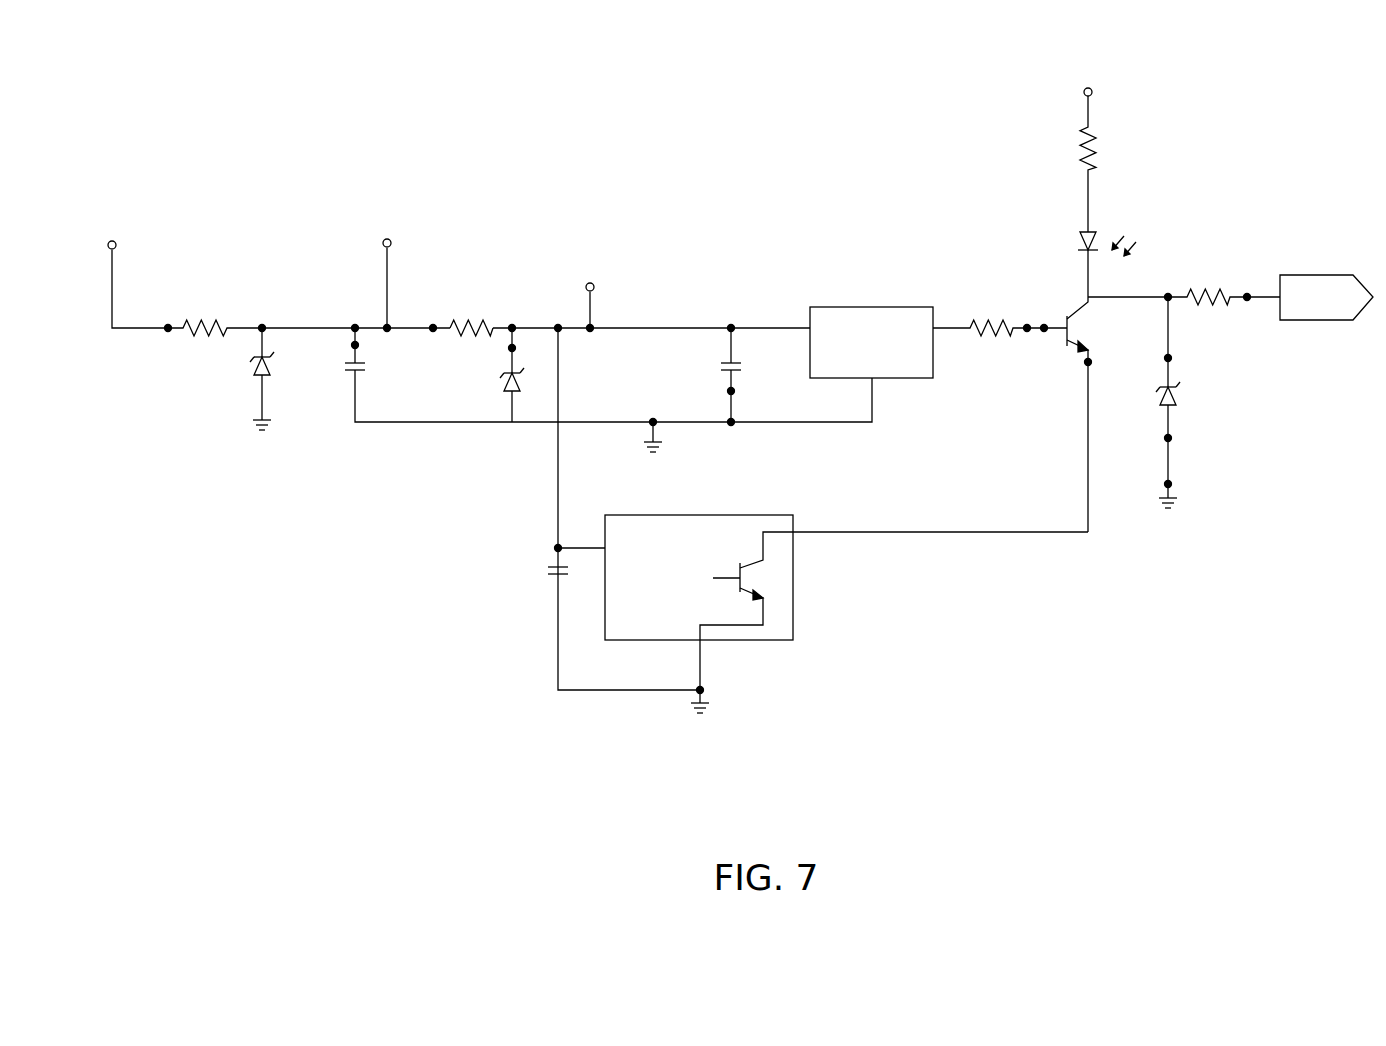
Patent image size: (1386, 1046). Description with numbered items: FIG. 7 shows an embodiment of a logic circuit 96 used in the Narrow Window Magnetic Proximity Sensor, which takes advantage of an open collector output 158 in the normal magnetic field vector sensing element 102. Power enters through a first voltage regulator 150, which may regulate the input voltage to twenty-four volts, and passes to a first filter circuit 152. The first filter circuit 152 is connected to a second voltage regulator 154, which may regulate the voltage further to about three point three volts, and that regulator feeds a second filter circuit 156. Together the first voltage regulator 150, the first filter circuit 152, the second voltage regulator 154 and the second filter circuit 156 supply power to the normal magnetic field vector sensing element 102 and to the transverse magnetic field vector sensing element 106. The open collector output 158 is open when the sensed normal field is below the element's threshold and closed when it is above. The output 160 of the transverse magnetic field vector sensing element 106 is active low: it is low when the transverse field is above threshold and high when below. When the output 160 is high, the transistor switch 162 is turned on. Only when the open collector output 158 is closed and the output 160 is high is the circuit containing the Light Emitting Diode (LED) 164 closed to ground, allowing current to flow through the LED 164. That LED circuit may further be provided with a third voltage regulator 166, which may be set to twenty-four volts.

The logic circuit 96 is at (633, 130).
The first voltage regulator 150 is at (170, 266).
The first filter circuit 152 is at (375, 412).
The second voltage regulator 154 is at (512, 266).
The second filter circuit 156 is at (701, 266).
The transverse magnetic field vector sensing element 106 is at (896, 278).
The output of the transverse magnetic field vector sensing element 160 is at (941, 327).
The transistor switch 162 is at (1063, 318).
The Light Emitting Diode (LED) 164 is at (1094, 232).
The third voltage regulator 166 is at (1297, 360).
The normal magnetic field vector sensing element 102 is at (602, 672).
The open collector output 158 is at (862, 535).